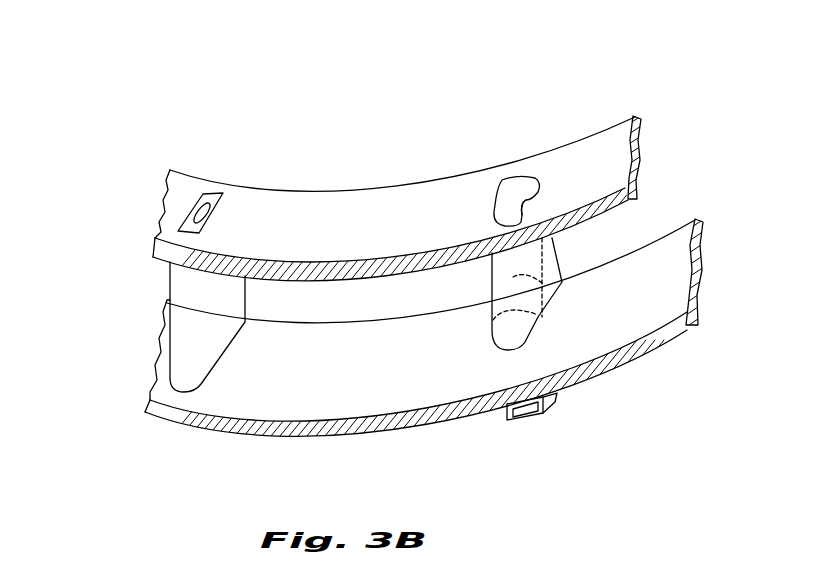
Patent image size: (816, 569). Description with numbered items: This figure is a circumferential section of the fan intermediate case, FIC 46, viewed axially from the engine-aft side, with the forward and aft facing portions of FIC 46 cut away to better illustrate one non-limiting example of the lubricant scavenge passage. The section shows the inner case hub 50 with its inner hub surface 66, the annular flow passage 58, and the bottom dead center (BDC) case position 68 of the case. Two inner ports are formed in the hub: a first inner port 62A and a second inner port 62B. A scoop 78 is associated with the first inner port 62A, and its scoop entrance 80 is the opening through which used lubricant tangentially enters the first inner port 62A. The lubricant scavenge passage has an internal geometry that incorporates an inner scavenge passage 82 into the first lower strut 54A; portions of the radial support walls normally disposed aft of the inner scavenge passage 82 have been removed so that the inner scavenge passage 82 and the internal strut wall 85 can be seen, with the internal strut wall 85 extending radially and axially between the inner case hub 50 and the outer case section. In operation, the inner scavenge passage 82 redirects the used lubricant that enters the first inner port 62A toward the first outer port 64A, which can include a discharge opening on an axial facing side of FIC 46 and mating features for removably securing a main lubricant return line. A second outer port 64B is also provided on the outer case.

The FIC 46 is at (708, 86).
The inner case hub 50 is at (157, 180).
The annular flow passage 58 is at (131, 399).
The inner hub surface 66 is at (358, 236).
The bottom dead center (BDC) case position 68 is at (162, 442).
The first inner port 62A is at (552, 190).
The second inner port 62B is at (219, 183).
The first outer port 64A is at (523, 429).
The second outer port 64B is at (161, 292).
The scoop 78 is at (508, 180).
The scoop entrance 80 is at (528, 205).
The first lower strut 54A is at (476, 334).
The inner scavenge passage 82 is at (542, 283).
The internal strut wall 85 is at (505, 306).